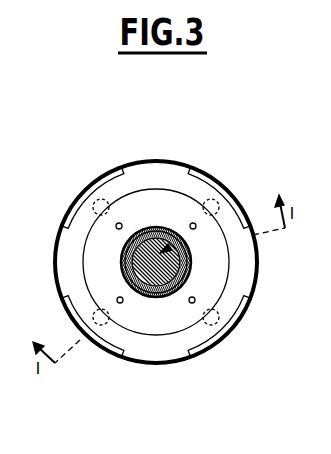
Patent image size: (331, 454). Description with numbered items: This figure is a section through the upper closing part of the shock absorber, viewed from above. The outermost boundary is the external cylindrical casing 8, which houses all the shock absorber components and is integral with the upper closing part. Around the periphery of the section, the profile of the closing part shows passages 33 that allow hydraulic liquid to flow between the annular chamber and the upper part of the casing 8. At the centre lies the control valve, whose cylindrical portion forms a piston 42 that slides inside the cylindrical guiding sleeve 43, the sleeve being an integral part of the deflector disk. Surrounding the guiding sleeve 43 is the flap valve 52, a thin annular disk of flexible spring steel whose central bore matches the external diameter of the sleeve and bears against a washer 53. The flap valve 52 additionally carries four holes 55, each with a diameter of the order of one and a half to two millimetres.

The external cylindrical casing 8 is at (180, 363).
The passages 33 is at (118, 353).
The piston 42 is at (160, 253).
The cylindrical guiding sleeve 43 is at (177, 232).
The flap valve 52 is at (150, 207).
The washer 53 is at (143, 233).
The holes 55 is at (191, 303).